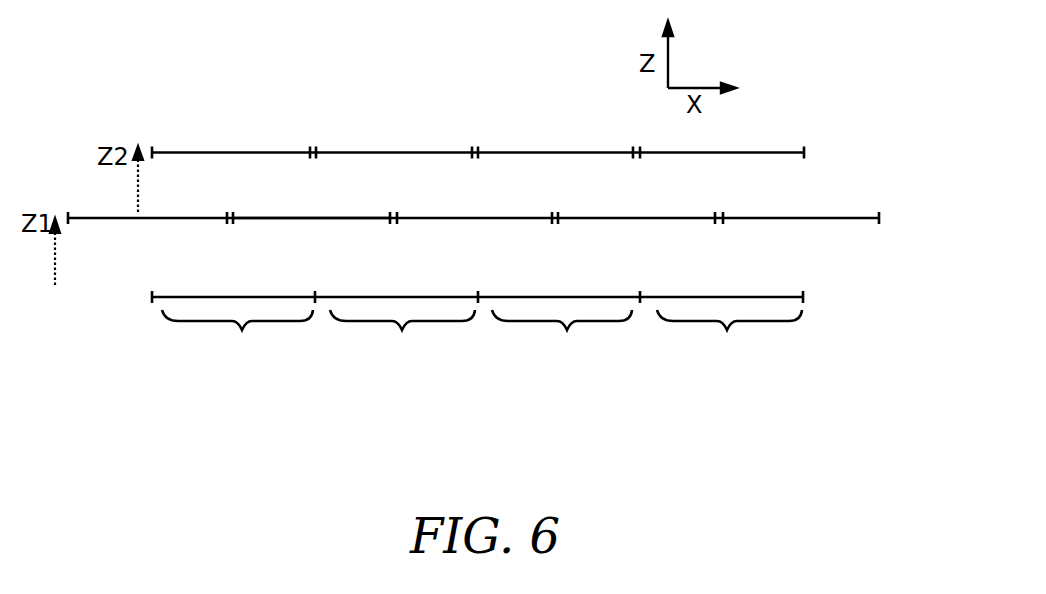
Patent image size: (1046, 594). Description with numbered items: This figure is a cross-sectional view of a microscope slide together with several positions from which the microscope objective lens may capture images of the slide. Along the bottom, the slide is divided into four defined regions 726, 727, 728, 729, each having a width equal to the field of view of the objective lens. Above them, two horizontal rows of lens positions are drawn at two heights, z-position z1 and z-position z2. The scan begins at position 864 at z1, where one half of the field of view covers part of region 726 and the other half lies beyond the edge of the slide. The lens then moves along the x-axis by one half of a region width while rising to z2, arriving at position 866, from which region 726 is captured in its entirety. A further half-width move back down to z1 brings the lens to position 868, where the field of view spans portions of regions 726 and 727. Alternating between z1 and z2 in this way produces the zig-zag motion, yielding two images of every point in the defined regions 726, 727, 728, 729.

The position 864 is at (123, 222).
The position 866 is at (257, 152).
The position 868 is at (293, 220).
The region 726 is at (237, 340).
The region 727 is at (402, 340).
The region 728 is at (562, 340).
The region 729 is at (729, 340).